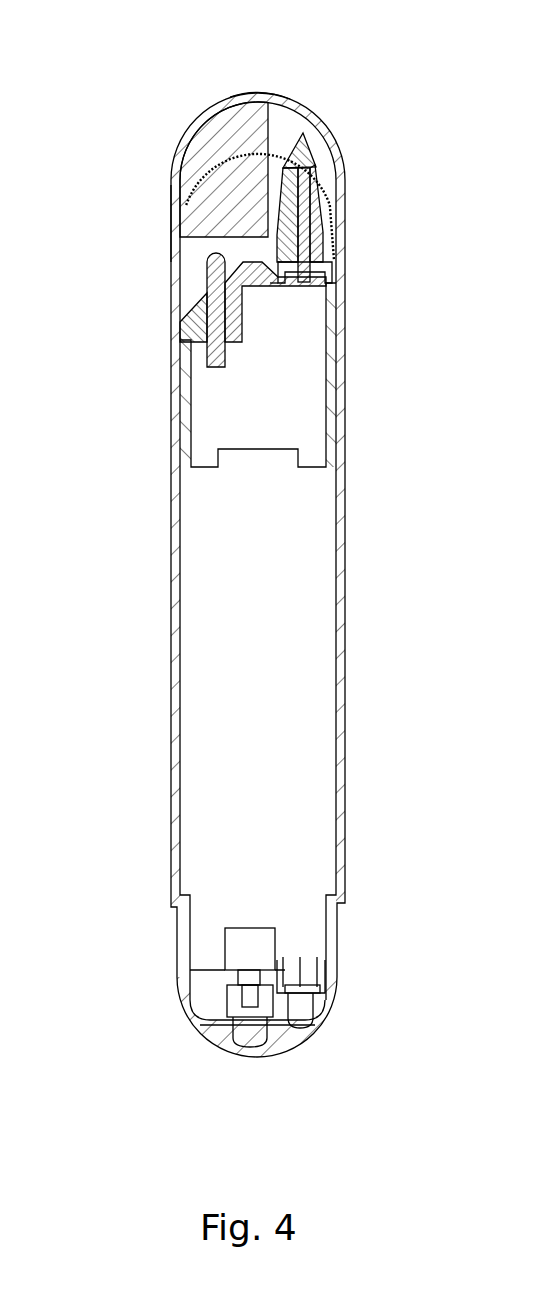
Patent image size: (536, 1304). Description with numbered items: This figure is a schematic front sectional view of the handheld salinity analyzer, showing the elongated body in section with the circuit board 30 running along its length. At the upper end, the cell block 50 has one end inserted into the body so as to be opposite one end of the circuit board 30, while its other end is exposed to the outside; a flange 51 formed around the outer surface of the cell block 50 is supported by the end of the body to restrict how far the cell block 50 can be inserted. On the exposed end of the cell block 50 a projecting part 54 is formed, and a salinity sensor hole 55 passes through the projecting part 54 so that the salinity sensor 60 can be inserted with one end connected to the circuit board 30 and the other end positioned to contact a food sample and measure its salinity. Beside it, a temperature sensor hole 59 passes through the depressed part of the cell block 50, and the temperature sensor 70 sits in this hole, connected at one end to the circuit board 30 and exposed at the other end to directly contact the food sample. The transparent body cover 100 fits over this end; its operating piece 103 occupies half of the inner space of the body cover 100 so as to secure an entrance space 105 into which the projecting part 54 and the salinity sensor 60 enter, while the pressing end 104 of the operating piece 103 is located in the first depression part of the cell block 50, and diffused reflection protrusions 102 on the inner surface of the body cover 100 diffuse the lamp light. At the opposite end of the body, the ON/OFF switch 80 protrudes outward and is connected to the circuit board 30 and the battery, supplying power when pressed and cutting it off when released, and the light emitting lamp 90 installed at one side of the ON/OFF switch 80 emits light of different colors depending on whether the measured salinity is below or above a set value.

The circuit board 30 is at (262, 682).
The cell block 50 is at (182, 308).
The flange 51 is at (177, 382).
The projecting part 54 is at (327, 220).
The salinity sensor hole 55 is at (332, 253).
The temperature sensor hole 59 is at (178, 328).
The salinity sensor 60 is at (344, 187).
The temperature sensor 70 is at (207, 263).
The ON/OFF switch 80 is at (253, 1030).
The light emitting lamp 90 is at (298, 1005).
The body cover 100 is at (166, 146).
The diffused reflection protrusions 102 is at (241, 122).
The operating piece 103 is at (226, 201).
The pressing end 104 is at (171, 222).
The entrance space 105 is at (283, 118).